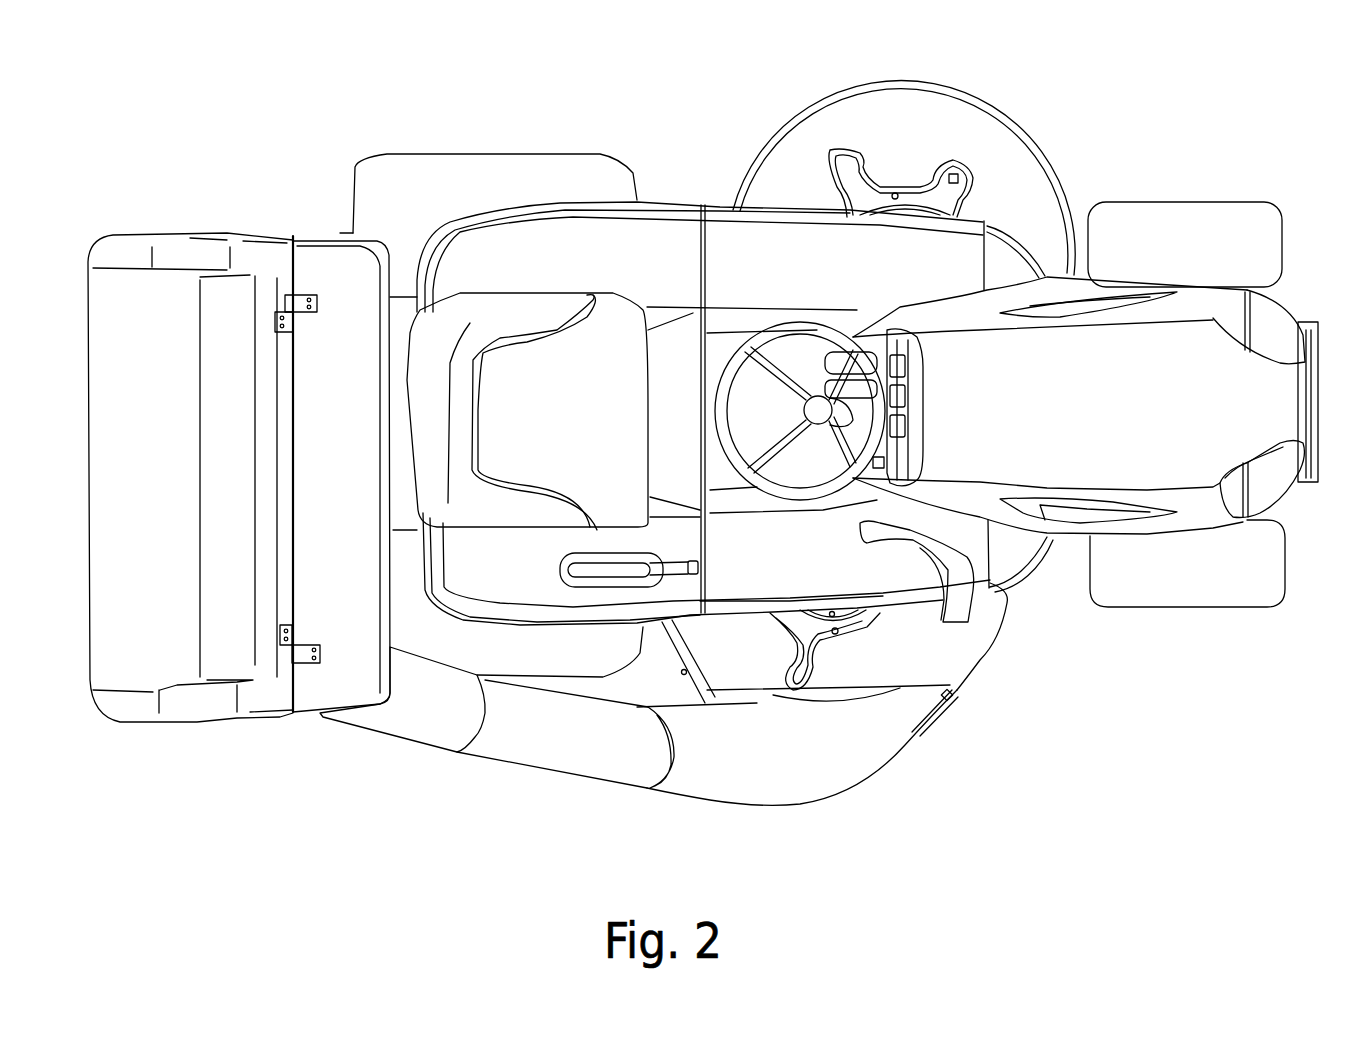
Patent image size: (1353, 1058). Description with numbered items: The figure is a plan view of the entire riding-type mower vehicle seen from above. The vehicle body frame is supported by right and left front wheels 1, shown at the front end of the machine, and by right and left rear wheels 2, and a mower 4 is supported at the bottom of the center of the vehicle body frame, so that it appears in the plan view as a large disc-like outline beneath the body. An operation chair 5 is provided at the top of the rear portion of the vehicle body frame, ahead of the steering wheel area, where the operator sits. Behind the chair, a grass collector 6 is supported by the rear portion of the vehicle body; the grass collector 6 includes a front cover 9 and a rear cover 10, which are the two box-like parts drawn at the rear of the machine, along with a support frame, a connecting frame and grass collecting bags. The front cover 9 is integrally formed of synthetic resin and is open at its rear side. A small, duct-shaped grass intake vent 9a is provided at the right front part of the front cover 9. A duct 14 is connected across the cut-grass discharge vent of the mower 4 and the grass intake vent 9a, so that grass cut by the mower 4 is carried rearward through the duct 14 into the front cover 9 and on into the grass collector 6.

The front wheel 1 is at (1172, 215).
The rear wheel 2 is at (493, 160).
The mower 4 is at (827, 120).
The operation chair 5 is at (615, 317).
The grass collector 6 is at (265, 182).
The front cover 9 is at (322, 257).
The grass intake vent 9a is at (403, 725).
The rear cover 10 is at (178, 245).
The duct 14 is at (557, 757).